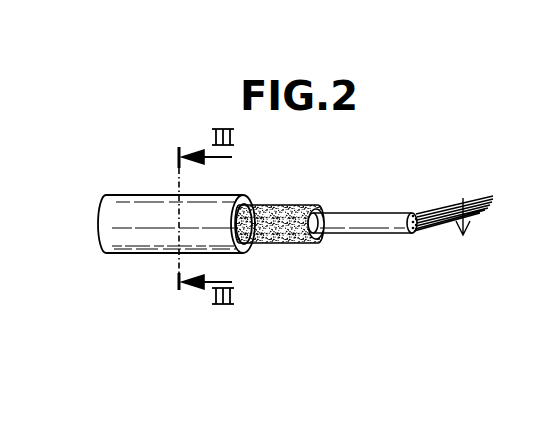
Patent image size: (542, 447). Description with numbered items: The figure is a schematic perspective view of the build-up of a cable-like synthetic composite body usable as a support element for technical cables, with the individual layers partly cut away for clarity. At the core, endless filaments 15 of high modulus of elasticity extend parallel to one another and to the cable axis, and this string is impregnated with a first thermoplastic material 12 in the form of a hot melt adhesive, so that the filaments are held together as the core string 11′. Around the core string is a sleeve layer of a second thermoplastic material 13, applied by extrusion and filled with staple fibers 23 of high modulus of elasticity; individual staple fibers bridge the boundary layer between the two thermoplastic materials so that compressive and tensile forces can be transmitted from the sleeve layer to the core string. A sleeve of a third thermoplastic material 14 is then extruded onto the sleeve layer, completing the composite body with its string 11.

The string 11 is at (460, 198).
The core string 11′ is at (390, 212).
The first thermoplastic material 12 is at (376, 234).
The second thermoplastic material 13 is at (328, 206).
The third thermoplastic material 14 is at (252, 198).
The endless filaments 15 is at (460, 231).
The staple fibers 23 is at (280, 243).